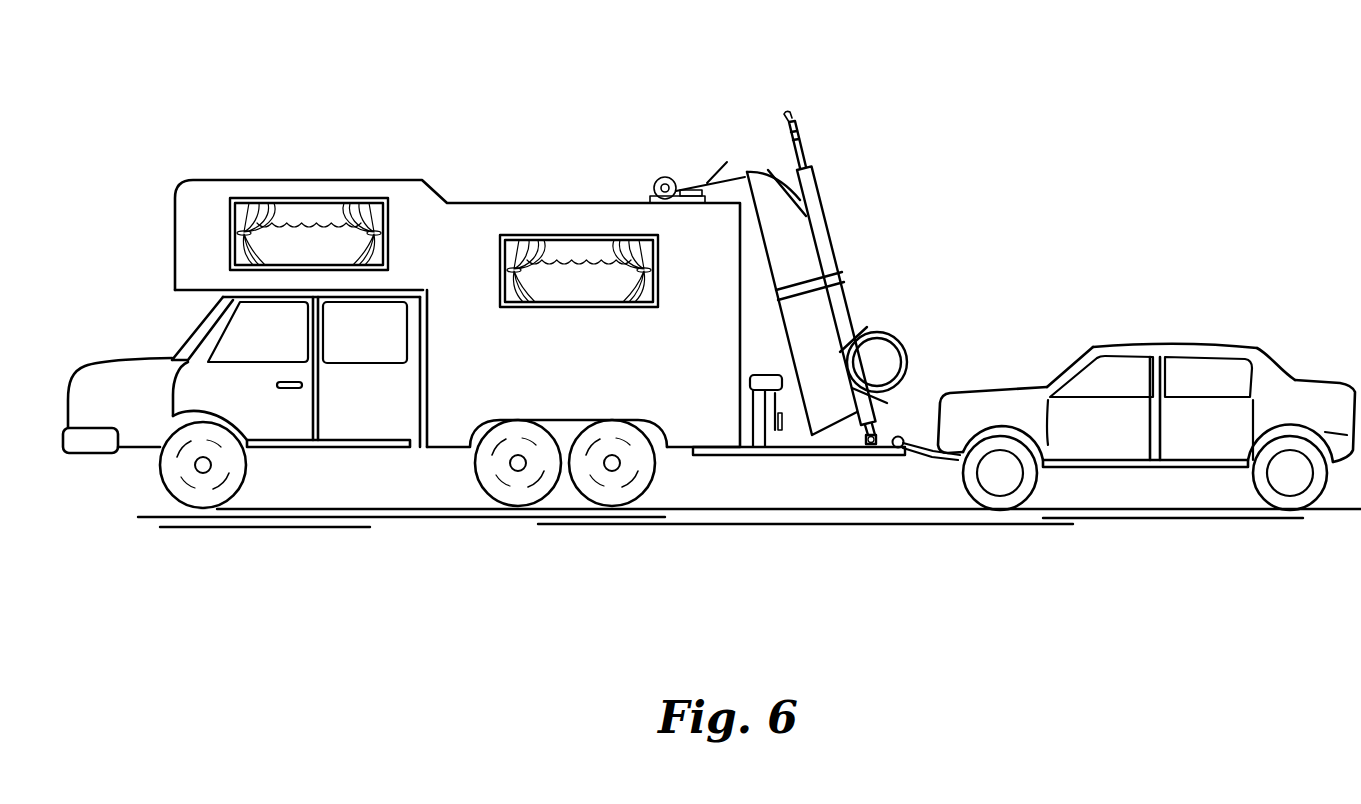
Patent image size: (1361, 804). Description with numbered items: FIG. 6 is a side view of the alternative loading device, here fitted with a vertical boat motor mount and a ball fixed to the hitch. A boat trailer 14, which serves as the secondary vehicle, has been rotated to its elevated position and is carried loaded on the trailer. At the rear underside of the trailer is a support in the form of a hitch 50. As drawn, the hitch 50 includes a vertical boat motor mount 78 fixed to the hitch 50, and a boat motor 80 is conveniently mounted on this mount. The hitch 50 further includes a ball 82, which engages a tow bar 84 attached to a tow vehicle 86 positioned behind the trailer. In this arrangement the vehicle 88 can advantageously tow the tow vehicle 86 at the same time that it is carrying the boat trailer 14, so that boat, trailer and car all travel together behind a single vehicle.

The boat trailer 14 is at (833, 215).
The hitch 50 is at (790, 450).
The vertical boat motor mount 78 is at (757, 455).
The boat motor 80 is at (755, 376).
The ball 82 is at (903, 437).
The tow bar 84 is at (922, 447).
The tow vehicle 86 is at (1007, 397).
The vehicle 88 is at (437, 163).